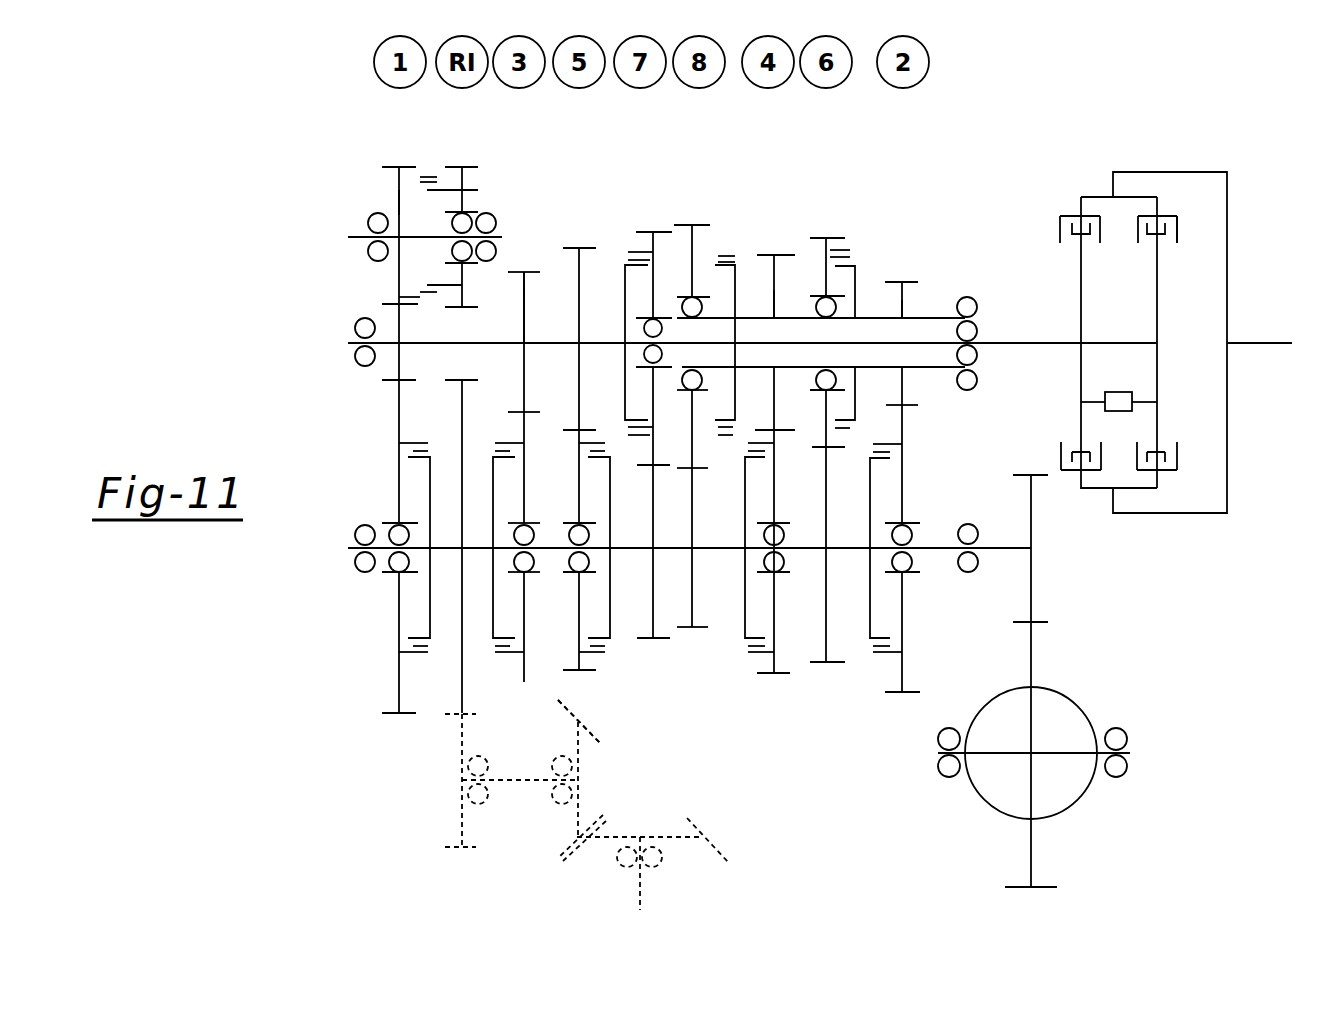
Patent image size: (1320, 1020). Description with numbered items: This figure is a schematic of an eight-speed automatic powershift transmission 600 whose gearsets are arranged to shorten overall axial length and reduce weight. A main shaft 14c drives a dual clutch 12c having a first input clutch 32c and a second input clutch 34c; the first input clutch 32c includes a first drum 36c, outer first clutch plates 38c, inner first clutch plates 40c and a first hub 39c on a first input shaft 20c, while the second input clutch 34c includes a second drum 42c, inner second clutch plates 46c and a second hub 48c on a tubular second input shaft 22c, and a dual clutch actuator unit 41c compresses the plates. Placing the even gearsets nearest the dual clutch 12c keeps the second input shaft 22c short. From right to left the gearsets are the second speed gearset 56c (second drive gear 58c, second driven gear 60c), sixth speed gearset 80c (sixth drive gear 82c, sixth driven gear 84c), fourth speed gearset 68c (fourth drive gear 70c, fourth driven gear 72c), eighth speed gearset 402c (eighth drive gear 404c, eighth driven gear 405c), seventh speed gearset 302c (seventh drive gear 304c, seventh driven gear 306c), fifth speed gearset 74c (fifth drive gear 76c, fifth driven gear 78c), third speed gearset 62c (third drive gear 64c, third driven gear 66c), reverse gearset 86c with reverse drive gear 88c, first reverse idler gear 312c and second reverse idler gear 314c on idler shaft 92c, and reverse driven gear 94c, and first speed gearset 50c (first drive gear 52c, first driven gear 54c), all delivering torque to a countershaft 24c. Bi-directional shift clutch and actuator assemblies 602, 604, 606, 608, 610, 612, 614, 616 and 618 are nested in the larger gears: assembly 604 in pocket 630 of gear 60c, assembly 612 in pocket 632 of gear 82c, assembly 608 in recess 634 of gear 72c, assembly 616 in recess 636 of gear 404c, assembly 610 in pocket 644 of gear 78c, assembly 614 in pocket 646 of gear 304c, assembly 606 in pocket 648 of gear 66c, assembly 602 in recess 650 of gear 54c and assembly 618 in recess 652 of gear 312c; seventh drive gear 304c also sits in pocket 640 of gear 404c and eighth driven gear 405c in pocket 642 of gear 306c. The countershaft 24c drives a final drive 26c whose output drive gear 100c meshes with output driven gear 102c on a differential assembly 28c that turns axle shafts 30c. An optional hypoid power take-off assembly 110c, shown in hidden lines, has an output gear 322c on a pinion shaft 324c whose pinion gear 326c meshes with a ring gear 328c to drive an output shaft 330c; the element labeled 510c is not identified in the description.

The eight-speed automatic powershift transmission 600 is at (243, 138).
The first speed gearset 50c is at (388, 145).
The first reverse idler gear 312c is at (399, 201).
The recess 652 is at (395, 190).
The idler shaft 92c is at (357, 235).
The first drive gear 52c is at (362, 318).
The recess 650 is at (397, 428).
The first bi-directional shift clutch and actuator assembly 602 is at (425, 662).
The first driven gear 54c is at (399, 688).
The reverse gearset 86c is at (460, 155).
The ninth bi-directional clutch and actuator assembly 618 is at (428, 165).
The second reverse idler gear 314c is at (462, 174).
The reverse drive gear 88c is at (462, 277).
The reverse driven gear 94c is at (462, 415).
The third speed gearset 62c is at (524, 266).
The third drive gear 64c is at (524, 292).
The fifth drive gear 76c is at (545, 303).
The third driven gear 66c is at (524, 420).
The third bi-directional clutch and actuator assembly 606 is at (493, 658).
The pocket 648 is at (524, 682).
The fifth speed gearset 74c is at (590, 240).
The pocket 644 is at (582, 435).
The fifth bi-directional clutch and actuator assembly 610 is at (621, 660).
The fifth driven gear 78c is at (579, 626).
The seventh bi-directional clutch and actuator assembly 614 is at (614, 247).
The pocket 646 is at (640, 232).
The seventh speed gearset 302c is at (648, 220).
The seventh drive gear 304c is at (655, 277).
The seventh driven gear 306c is at (653, 538).
The pocket 642 is at (658, 638).
The eighth speed gearset 402c is at (701, 218).
The eighth drive gear 404c is at (692, 247).
The recess 636 is at (705, 229).
The eighth bi-directional clutch and actuator assembly 616 is at (744, 240).
The pocket 640 is at (692, 447).
The eighth driven gear 405c is at (712, 522).
The fourth speed gearset 68c is at (775, 242).
The fourth drive gear 70c is at (774, 303).
The fourth bi-directional clutch and actuator assembly 608 is at (742, 655).
The fourth driven gear 72c is at (774, 620).
The recess 634 is at (774, 673).
The sixth speed gearset 80c is at (828, 233).
The sixth drive gear 82c is at (826, 284).
The pocket 632 is at (828, 250).
The sixth bi-directional clutch and actuator assembly 612 is at (866, 250).
The sixth driven gear 84c is at (826, 584).
The second speed gearset 56c is at (905, 277).
The second drive gear 58c is at (902, 308).
The second driven gear 60c is at (903, 415).
The second bi-directional shift clutch and actuator assembly 604 is at (866, 655).
The pocket 630 is at (902, 686).
The second input shaft 22c is at (988, 325).
The first input shaft 20c is at (1143, 343).
The countershaft 24c is at (998, 550).
The output drive gear 100c is at (1031, 492).
The output driven gear 102c is at (1031, 643).
The final drive 26c is at (1049, 580).
The differential assembly 28c is at (1094, 815).
The axle shafts 30c is at (1068, 750).
The first input clutch 32c is at (1240, 222).
The dual clutch 12c is at (1165, 165).
The second drum 42c is at (1089, 197).
The second input clutch 34c is at (1058, 190).
The first hub 39c is at (1157, 309).
The second hub 48c is at (1078, 251).
The inner second clutch plates 46c is at (1090, 226).
The first drum 36c is at (1170, 215).
The inner first clutch plates 40c is at (1146, 228).
The outer first clutch plates 38c is at (1178, 228).
The dual clutch actuator unit 41c is at (1140, 365).
The main shaft 14c is at (1267, 341).
The hypoid power take-off assembly 110c is at (372, 748).
The output gear 322c is at (462, 835).
The pinion shaft 324c is at (521, 783).
The pinion gear 326c is at (580, 749).
The transfer gear set 510c is at (670, 738).
The ring gear 328c is at (693, 828).
The output shaft 330c is at (640, 890).